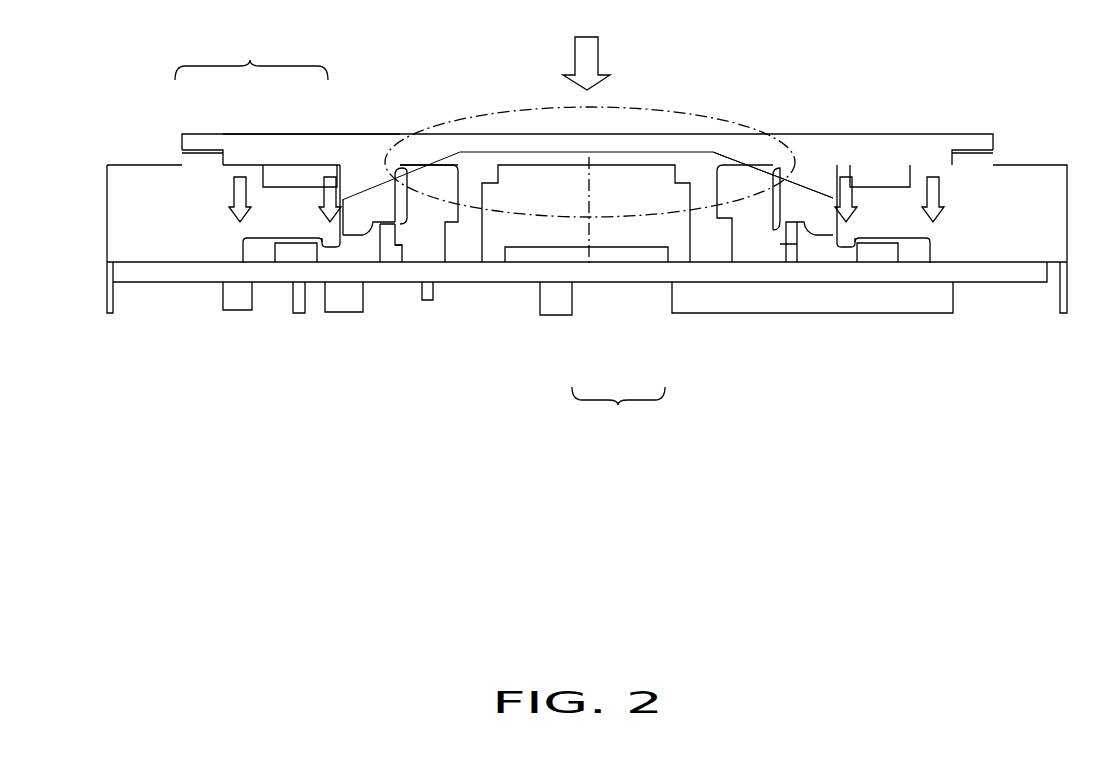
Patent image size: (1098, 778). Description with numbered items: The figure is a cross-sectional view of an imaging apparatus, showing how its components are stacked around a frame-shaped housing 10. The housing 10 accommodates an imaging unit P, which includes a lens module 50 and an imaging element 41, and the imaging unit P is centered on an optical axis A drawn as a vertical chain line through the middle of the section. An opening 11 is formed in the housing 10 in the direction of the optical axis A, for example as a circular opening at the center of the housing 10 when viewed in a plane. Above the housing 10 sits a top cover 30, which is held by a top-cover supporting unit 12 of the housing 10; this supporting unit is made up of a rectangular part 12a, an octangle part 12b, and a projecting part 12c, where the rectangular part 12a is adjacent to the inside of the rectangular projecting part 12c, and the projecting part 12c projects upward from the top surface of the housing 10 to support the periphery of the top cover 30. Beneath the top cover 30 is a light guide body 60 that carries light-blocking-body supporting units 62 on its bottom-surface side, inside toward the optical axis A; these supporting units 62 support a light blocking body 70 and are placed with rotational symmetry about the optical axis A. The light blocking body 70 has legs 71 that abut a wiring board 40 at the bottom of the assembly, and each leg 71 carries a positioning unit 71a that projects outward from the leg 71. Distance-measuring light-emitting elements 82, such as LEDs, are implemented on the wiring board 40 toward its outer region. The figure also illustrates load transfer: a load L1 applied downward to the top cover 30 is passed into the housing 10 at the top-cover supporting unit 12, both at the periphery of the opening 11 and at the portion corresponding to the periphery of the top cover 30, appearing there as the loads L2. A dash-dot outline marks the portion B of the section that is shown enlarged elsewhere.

The housing 10 is at (158, 153).
The opening 11 is at (342, 200).
The top-cover supporting unit 12 is at (584, 100).
The rectangular part 12a is at (238, 176).
The octangle part 12b is at (330, 170).
The projecting part 12c is at (200, 157).
The top cover 30 is at (838, 134).
The wiring board 40 is at (473, 293).
The imaging element 41 is at (630, 252).
The lens module 50 is at (668, 240).
The light guide body 60 is at (816, 173).
The light-blocking-body supporting unit 62 is at (396, 232).
The light blocking body 70 is at (757, 274).
The leg 71 is at (418, 258).
The positioning unit 71a is at (383, 243).
The distance-measuring light-emitting element 82 is at (292, 253).
The optical axis A is at (588, 227).
The portion B is at (498, 112).
The imaging unit P is at (618, 417).
The load L1 is at (601, 63).
The load L2 is at (584, 200).